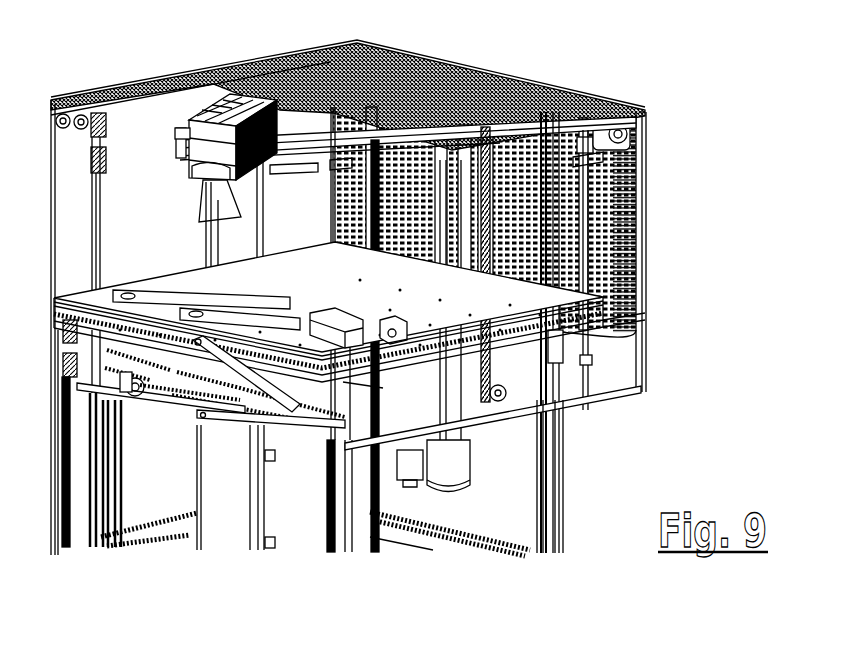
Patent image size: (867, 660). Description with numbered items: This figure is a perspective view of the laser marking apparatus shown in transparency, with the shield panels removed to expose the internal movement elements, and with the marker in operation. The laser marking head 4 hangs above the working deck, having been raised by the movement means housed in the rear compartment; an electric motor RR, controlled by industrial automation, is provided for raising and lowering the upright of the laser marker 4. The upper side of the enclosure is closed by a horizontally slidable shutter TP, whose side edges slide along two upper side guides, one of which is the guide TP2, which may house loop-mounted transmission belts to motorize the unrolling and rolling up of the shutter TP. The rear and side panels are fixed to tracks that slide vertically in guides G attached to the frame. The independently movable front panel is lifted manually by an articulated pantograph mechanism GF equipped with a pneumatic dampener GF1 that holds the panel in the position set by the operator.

The laser marking head 4 is at (213, 104).
The shutter TP is at (457, 78).
The upper side guide TP2 is at (567, 133).
The articulated pantograph mechanism GF is at (226, 410).
The pneumatic dampener GF1 is at (172, 378).
The guide G is at (552, 390).
The electric motor RR is at (445, 477).